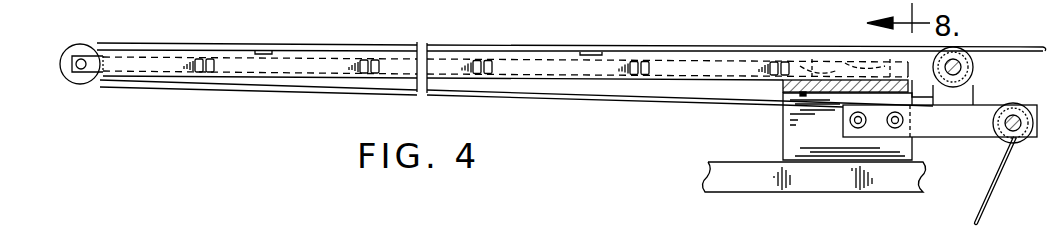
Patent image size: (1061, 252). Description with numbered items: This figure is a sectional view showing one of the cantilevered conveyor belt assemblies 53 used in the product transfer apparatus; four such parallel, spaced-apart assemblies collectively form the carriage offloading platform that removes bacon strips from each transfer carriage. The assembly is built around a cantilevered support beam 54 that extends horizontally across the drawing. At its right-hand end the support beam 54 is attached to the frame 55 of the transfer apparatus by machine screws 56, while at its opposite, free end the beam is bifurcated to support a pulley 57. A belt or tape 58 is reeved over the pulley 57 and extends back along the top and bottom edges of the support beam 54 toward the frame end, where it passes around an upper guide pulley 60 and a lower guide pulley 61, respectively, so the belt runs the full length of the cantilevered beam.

The cantilevered conveyor belt assembly 53 is at (541, 42).
The cantilevered support beam 54 is at (243, 68).
The frame 55 is at (793, 115).
The machine screws 56 is at (848, 62).
The pulley 57 is at (81, 87).
The belt or tape 58 is at (334, 46).
The upper guide pulley 60 is at (968, 66).
The lower guide pulley 61 is at (1020, 142).